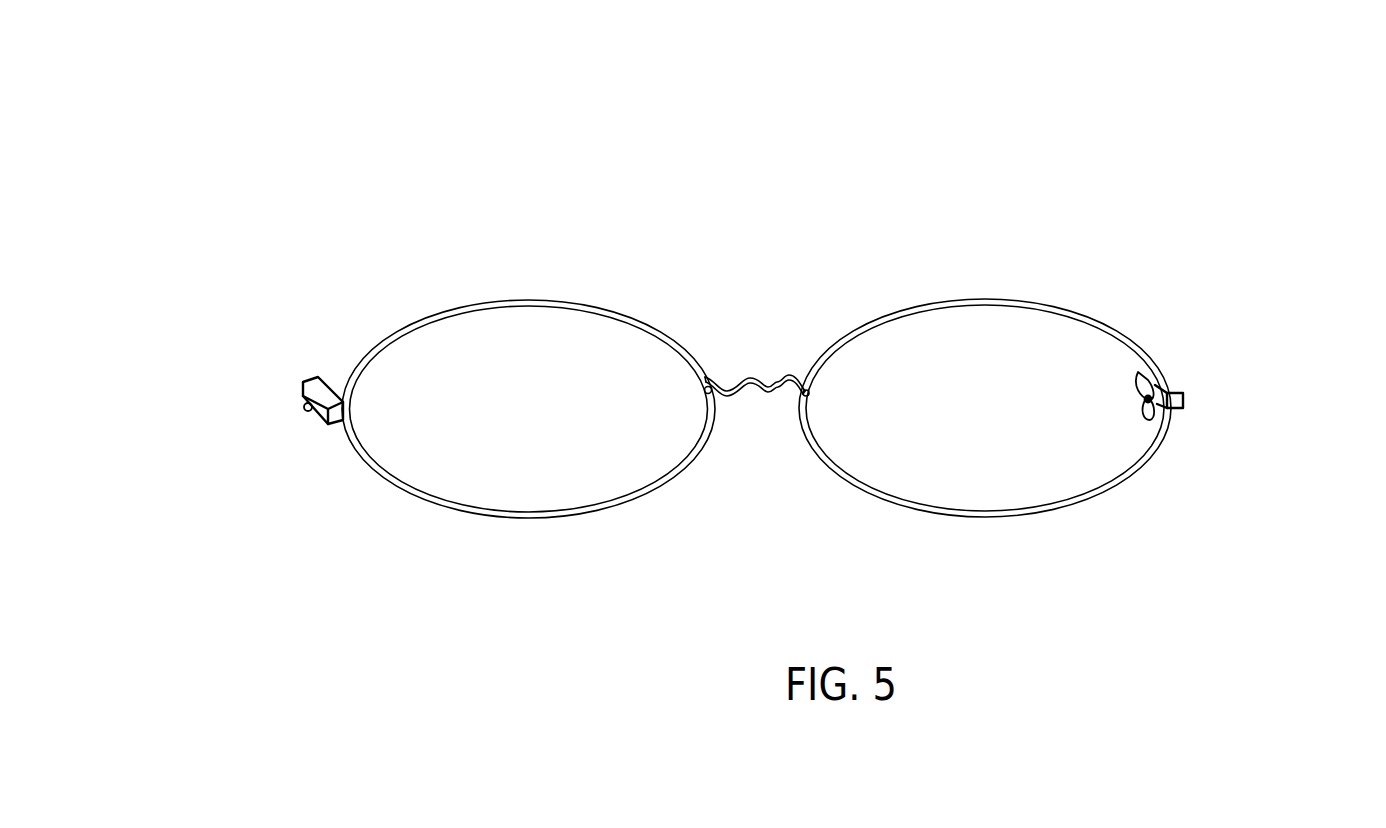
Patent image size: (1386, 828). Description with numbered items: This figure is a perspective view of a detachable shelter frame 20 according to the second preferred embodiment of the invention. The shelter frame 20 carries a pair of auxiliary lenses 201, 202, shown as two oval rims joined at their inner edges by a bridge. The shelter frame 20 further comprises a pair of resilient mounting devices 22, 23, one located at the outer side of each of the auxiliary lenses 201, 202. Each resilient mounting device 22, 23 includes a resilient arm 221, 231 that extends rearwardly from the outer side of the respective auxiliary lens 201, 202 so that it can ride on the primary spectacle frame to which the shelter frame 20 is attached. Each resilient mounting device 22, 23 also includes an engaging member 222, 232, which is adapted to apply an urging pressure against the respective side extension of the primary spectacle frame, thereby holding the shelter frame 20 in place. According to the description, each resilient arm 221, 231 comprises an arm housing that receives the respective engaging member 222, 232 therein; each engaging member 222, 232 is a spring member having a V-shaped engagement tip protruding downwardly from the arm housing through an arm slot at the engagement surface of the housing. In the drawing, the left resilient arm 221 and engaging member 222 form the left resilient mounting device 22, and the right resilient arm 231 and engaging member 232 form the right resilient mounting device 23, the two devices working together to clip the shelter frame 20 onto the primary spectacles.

The shelter frame 20 is at (813, 178).
The auxiliary lens 201 is at (512, 330).
The auxiliary lens 202 is at (982, 322).
The resilient mounting device 22 is at (175, 438).
The resilient arm 221 is at (323, 380).
The engaging member 222 is at (303, 405).
The resilient mounting device 23 is at (1298, 355).
The resilient arm 231 is at (1168, 388).
The engaging member 232 is at (1148, 408).